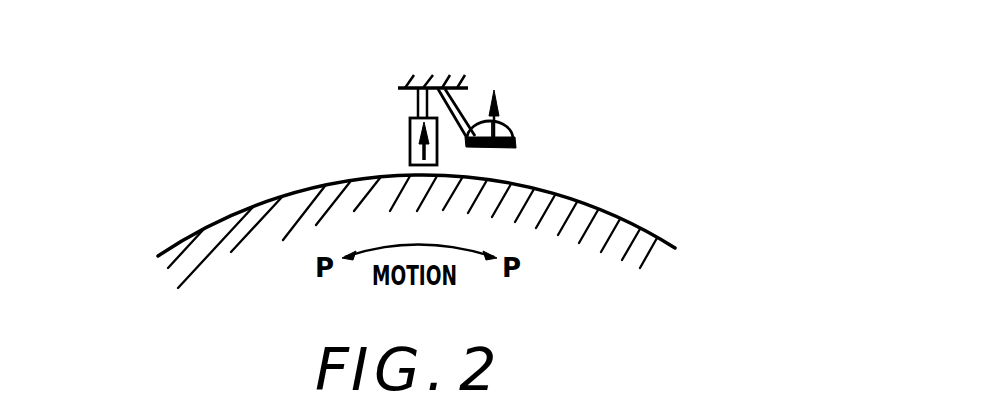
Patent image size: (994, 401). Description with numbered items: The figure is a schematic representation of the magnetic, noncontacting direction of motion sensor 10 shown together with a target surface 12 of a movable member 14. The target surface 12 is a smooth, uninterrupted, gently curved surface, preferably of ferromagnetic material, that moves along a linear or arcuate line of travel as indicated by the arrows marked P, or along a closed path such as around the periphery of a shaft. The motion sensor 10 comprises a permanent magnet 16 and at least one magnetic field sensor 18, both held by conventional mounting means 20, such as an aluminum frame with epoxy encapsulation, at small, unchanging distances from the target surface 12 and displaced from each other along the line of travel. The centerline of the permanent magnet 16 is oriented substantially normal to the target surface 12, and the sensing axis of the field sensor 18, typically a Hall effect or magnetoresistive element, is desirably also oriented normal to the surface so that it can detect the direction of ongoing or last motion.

The direction of motion sensor 10 is at (462, 87).
The target surface 12 is at (305, 190).
The movable member 14 is at (288, 268).
The permanent magnet 16 is at (403, 118).
The magnetic field sensor 18 is at (512, 133).
The mounting means 20 is at (453, 82).